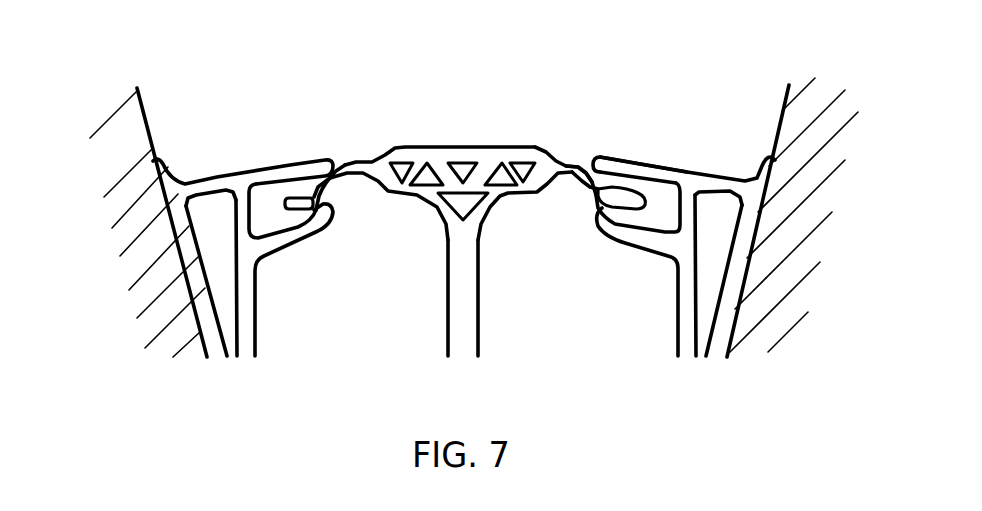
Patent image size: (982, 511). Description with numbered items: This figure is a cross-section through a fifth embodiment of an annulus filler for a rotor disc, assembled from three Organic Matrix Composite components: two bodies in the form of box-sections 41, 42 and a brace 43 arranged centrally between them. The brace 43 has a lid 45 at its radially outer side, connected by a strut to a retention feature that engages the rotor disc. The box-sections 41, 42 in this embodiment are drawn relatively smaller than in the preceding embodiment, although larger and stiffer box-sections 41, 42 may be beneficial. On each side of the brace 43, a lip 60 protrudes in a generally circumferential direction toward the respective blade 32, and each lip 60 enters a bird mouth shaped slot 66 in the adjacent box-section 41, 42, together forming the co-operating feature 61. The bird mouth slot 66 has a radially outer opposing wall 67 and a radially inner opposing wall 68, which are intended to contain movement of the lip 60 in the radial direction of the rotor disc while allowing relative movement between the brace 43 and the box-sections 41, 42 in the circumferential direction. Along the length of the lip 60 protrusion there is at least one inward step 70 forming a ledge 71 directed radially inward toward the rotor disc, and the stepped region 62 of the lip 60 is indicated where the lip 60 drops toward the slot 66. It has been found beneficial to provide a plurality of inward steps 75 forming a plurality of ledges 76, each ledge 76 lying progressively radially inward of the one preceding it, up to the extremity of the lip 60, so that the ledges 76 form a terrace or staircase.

The blade 32 is at (118, 138).
The box-section 41 is at (248, 315).
The box-section 42 is at (683, 303).
The brace 43 is at (462, 298).
The lid 45 is at (457, 148).
The lip 60 is at (372, 178).
The co-operating feature 61 is at (276, 172).
The step portion 62 is at (340, 162).
The bird mouth shaped slot 66 is at (247, 203).
The radially outer opposing wall 67 is at (636, 168).
The radially inner opposing wall 68 is at (637, 224).
The inward step 70 is at (580, 160).
The ledge 71 is at (595, 183).
The inward steps 75 is at (318, 218).
The ledges 76 is at (302, 198).